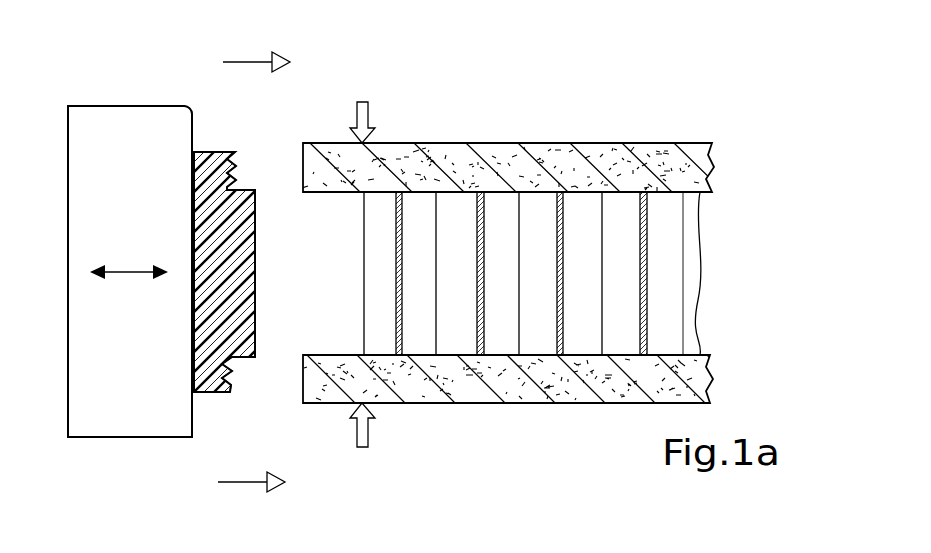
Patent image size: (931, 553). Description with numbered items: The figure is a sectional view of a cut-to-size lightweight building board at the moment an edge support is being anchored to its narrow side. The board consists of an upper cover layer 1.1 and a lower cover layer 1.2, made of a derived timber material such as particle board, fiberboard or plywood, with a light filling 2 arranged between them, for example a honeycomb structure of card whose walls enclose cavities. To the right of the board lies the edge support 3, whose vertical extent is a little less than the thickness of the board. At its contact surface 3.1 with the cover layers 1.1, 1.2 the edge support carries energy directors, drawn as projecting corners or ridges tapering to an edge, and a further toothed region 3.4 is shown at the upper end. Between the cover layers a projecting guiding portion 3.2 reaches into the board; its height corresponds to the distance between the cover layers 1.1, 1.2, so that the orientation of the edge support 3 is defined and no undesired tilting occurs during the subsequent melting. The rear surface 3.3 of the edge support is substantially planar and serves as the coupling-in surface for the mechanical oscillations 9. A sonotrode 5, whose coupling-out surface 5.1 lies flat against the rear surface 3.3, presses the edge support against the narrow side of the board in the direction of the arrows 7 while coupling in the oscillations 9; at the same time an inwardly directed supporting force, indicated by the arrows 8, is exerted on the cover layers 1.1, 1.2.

The upper cover layer 1.1 is at (711, 168).
The lower cover layer 1.2 is at (712, 377).
The filling 2 is at (667, 270).
The edge support 3 is at (262, 292).
The contact surface 3.1 is at (236, 375).
The guiding portion 3.2 is at (247, 229).
The rear surface 3.3 is at (187, 208).
The upper toothed portion of tool 3.4 is at (251, 186).
The sonotrode 5 is at (117, 155).
The coupling-out surface 5.1 is at (199, 127).
The arrows (pressing direction) 7 is at (249, 61).
The arrows (supporting force) 8 is at (372, 113).
The mechanical oscillations 9 is at (127, 278).